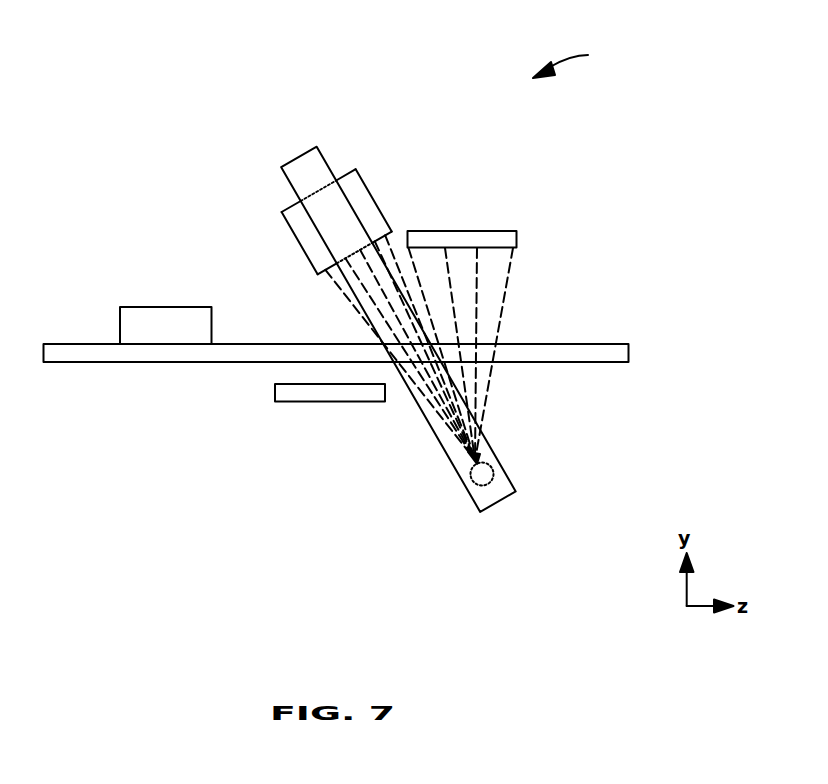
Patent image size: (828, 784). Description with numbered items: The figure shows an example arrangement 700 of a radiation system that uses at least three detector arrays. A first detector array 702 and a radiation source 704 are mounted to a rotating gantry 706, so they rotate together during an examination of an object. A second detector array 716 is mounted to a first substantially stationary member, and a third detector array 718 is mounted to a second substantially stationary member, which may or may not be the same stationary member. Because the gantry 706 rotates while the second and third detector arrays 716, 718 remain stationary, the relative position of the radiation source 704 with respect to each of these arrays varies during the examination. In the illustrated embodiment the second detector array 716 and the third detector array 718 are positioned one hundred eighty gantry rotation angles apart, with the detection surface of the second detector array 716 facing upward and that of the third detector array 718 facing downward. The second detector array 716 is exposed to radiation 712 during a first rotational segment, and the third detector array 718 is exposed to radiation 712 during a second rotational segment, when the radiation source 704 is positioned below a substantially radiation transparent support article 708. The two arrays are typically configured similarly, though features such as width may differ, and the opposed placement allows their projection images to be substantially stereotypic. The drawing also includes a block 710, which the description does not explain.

The arrangement 700 is at (584, 61).
The first detector array 702 is at (363, 200).
The radiation source 704 is at (492, 469).
The rotating gantry 706 is at (306, 170).
The support article 708 is at (595, 353).
The object block 710 is at (170, 327).
The radiation 712 is at (502, 305).
The second detector array 716 is at (330, 393).
The third detector array 718 is at (462, 242).